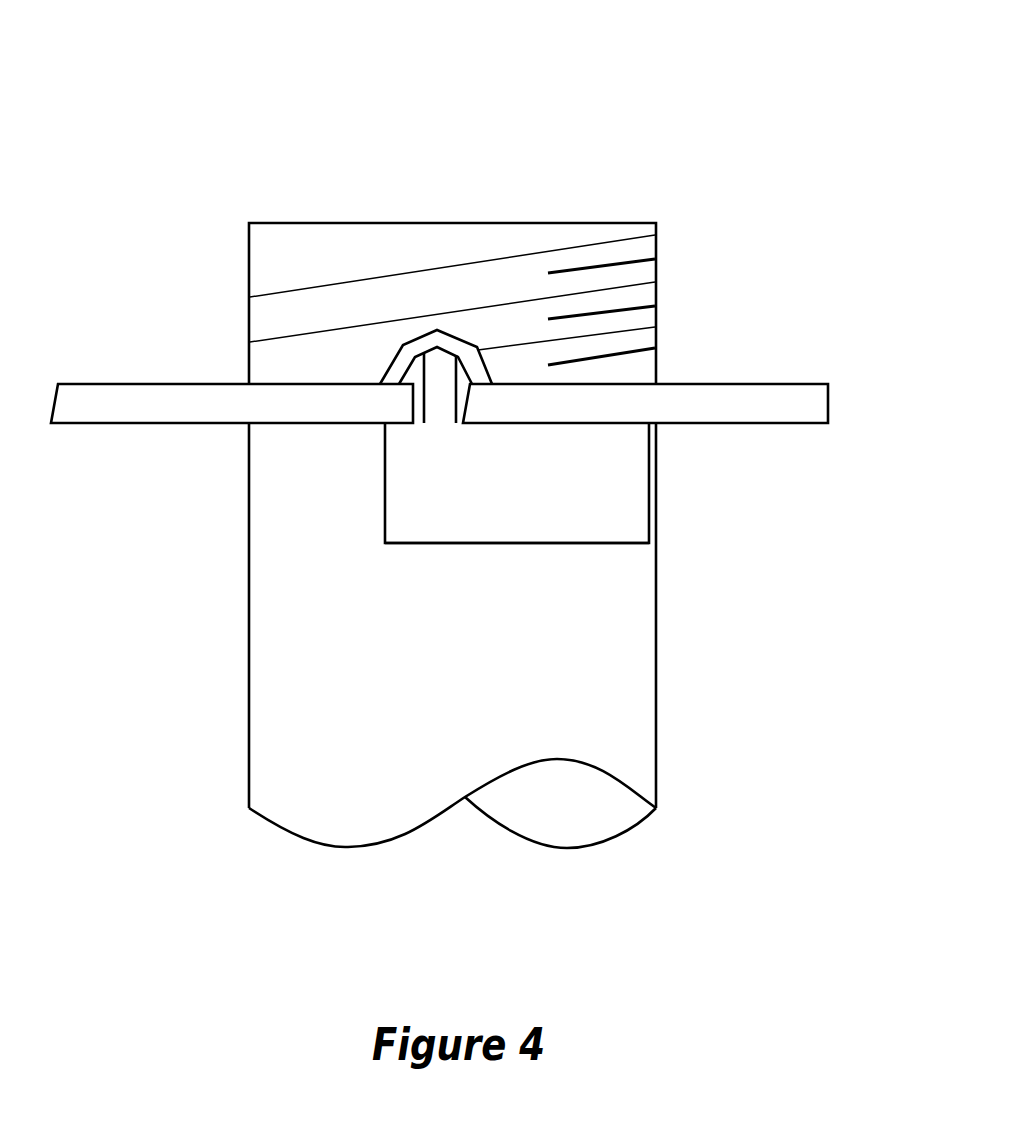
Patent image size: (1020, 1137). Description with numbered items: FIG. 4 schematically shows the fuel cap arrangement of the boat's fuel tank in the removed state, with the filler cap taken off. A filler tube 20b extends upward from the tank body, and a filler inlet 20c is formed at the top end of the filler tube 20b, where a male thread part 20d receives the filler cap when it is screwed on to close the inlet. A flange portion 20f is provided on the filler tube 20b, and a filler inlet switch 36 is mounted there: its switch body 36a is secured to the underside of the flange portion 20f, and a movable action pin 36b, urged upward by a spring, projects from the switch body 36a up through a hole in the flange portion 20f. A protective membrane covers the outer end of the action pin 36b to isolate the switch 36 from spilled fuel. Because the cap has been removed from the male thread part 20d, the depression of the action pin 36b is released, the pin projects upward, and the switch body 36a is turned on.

The filler inlet 20c is at (585, 221).
The male thread part 20d is at (630, 274).
The filler tube 20b is at (633, 734).
The flange portion 20f is at (783, 410).
The filler inlet switch 36 is at (536, 547).
The switch body 36a is at (428, 520).
The action pin 36b is at (438, 397).